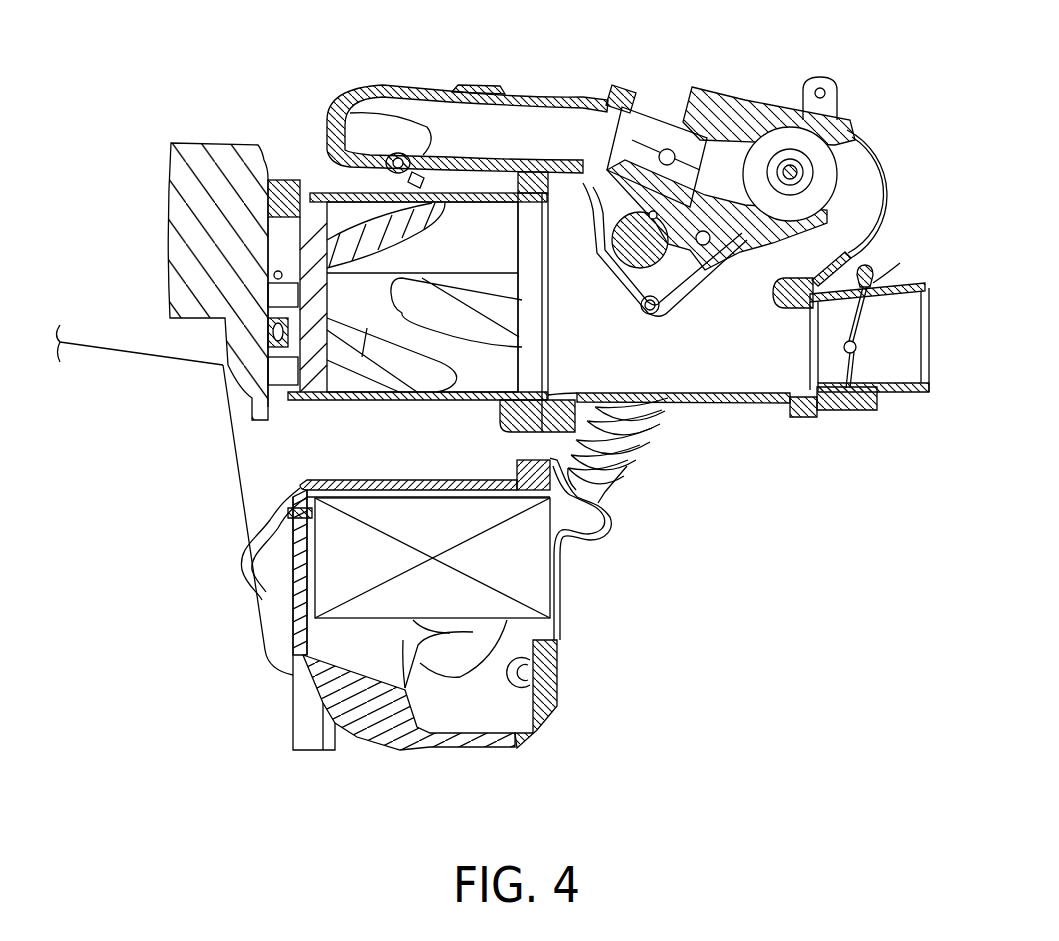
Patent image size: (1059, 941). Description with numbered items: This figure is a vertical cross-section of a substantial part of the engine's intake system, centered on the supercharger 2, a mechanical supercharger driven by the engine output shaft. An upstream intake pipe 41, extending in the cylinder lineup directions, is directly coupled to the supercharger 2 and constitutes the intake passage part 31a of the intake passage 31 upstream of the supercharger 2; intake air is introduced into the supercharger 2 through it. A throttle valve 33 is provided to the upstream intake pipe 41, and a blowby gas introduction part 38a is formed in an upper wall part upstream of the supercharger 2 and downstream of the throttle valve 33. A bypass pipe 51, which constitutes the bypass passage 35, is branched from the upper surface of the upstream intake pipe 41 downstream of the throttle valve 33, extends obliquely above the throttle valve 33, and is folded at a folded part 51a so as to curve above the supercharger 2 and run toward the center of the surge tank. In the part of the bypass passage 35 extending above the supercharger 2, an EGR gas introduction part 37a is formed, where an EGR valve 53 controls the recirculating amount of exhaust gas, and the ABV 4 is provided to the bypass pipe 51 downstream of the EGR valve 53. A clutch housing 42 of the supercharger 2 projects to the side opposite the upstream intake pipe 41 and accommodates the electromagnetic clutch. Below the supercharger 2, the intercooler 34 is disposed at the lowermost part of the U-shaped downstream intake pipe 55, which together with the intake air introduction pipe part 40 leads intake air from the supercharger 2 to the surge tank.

The supercharger 2 is at (373, 400).
The ABV 4 is at (650, 113).
The intake passage 31 is at (782, 420).
The intake passage part 31a is at (719, 392).
The throttle valve 33 is at (876, 290).
The intercooler 34 is at (293, 710).
The bypass passage 35 is at (433, 107).
The EGR gas introduction part 37a is at (830, 150).
The blowby gas introduction part 38a is at (742, 247).
The intake air introduction pipe part 40 is at (235, 424).
The upstream intake pipe 41 is at (632, 450).
The clutch housing 42 is at (106, 352).
The bypass pipe 51 is at (585, 84).
The folded part 51a is at (885, 178).
The EGR valve 53 is at (790, 163).
The downstream intake pipe 55 is at (229, 492).